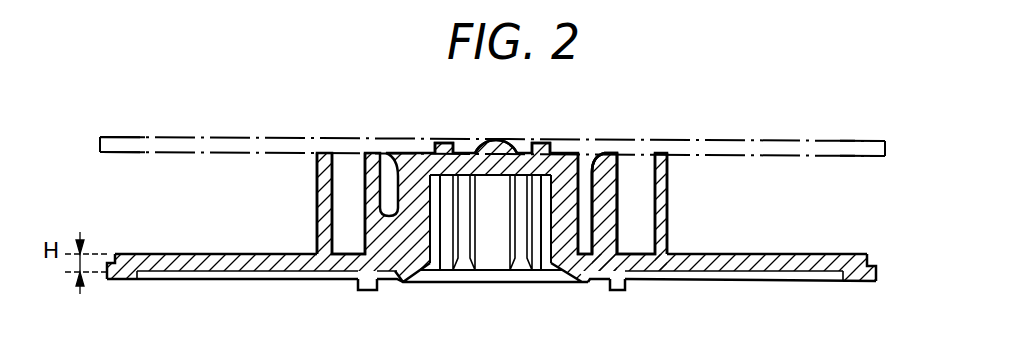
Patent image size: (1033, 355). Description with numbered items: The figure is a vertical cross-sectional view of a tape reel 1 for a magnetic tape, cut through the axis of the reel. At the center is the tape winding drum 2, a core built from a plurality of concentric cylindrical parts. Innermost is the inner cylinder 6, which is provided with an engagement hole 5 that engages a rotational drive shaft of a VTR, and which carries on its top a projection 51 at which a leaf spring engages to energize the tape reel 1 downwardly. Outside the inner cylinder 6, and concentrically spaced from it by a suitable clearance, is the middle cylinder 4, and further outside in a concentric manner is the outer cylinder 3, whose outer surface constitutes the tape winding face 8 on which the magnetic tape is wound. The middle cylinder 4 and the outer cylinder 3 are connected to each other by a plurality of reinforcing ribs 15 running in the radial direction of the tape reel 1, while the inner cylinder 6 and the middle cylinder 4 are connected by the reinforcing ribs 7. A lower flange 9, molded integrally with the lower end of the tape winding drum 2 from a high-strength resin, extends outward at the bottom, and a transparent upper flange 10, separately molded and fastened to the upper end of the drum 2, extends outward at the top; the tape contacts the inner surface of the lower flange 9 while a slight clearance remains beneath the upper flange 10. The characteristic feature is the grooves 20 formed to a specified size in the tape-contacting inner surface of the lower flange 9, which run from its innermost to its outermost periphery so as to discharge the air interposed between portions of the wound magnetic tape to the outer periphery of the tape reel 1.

The tape reel 1 is at (414, 100).
The tape winding drum 2 is at (658, 155).
The outer cylinder 3 is at (668, 193).
The middle cylinder 4 is at (621, 158).
The engagement hole 5 is at (497, 265).
The inner cylinder 6 is at (588, 157).
The reinforcing ribs 7 is at (389, 270).
The tape winding face 8 is at (668, 238).
The lower flange 9 is at (861, 283).
The upper flange 10 is at (790, 144).
The reinforcing ribs 15 is at (347, 162).
The grooves 20 is at (176, 253).
The projection 51 is at (488, 141).